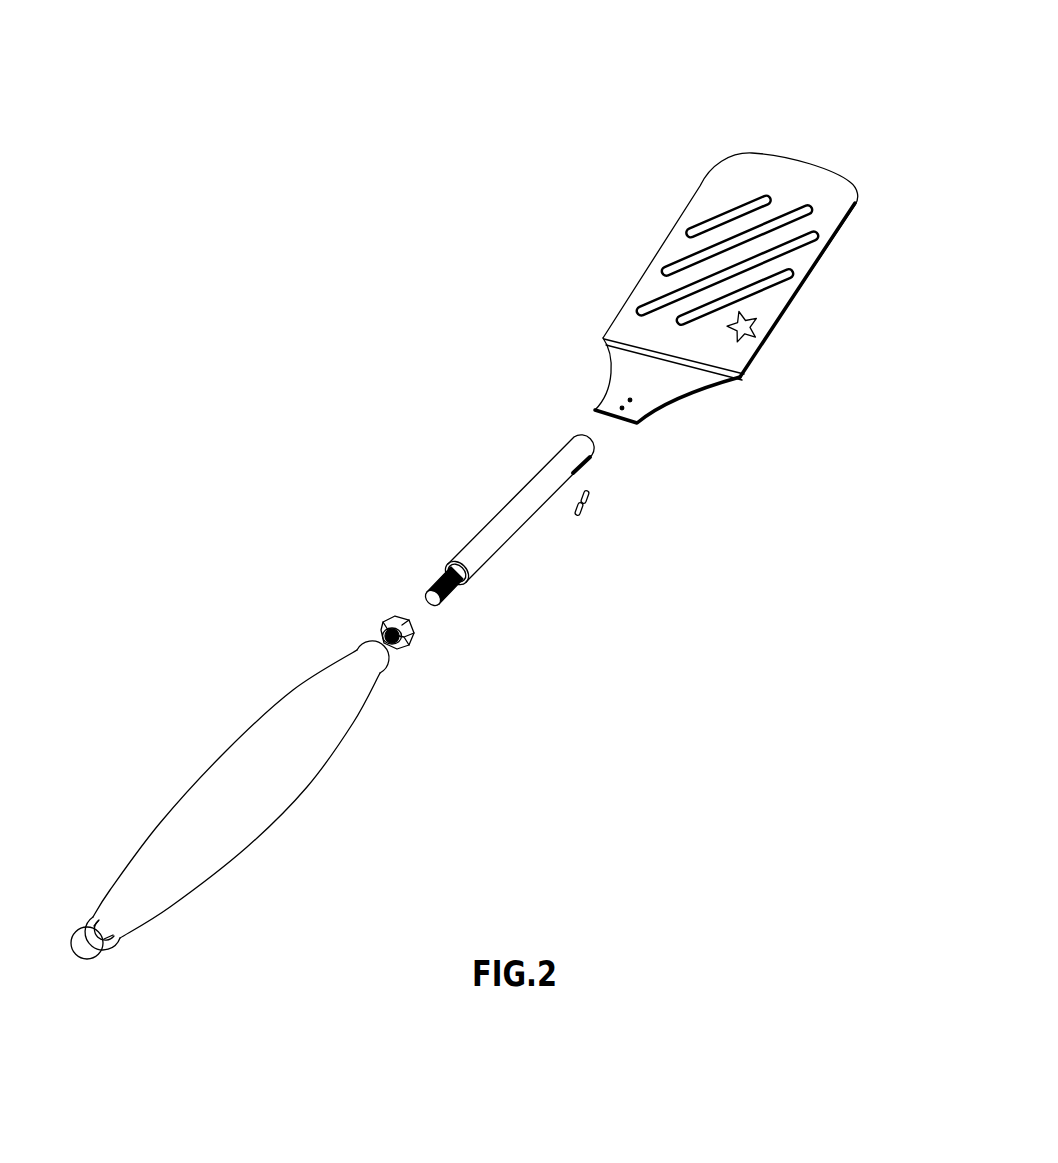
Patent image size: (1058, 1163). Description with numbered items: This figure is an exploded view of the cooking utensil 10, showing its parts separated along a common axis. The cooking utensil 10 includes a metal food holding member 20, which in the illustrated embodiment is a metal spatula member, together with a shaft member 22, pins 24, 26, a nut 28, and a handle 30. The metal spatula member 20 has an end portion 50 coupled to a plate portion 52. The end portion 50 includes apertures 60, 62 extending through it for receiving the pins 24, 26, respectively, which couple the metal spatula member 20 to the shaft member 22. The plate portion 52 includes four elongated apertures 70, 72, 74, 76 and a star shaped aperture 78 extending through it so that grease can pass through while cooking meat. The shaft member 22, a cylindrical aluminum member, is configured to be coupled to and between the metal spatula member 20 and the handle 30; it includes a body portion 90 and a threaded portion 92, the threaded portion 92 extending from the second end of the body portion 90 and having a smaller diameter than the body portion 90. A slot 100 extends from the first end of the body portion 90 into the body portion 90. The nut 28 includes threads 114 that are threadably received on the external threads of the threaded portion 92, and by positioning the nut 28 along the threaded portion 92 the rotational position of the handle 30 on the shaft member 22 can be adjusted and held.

The cooking utensil 10 is at (782, 55).
The metal food holding member 20 is at (795, 307).
The shaft member 22 is at (527, 530).
The pin 24 is at (580, 515).
The pin 26 is at (590, 505).
The nut 28 is at (407, 643).
The handle 30 is at (240, 840).
The end portion 50 is at (680, 375).
The plate portion 52 is at (813, 253).
The aperture 60 is at (622, 408).
The aperture 62 is at (630, 400).
The elongated aperture 70 is at (745, 205).
The elongated aperture 72 is at (787, 212).
The elongated aperture 74 is at (810, 233).
The elongated aperture 76 is at (718, 303).
The star shaped aperture 78 is at (750, 338).
The body portion 90 is at (515, 497).
The threaded portion 92 is at (455, 592).
The slot 100 is at (585, 467).
The threads 114 is at (395, 650).